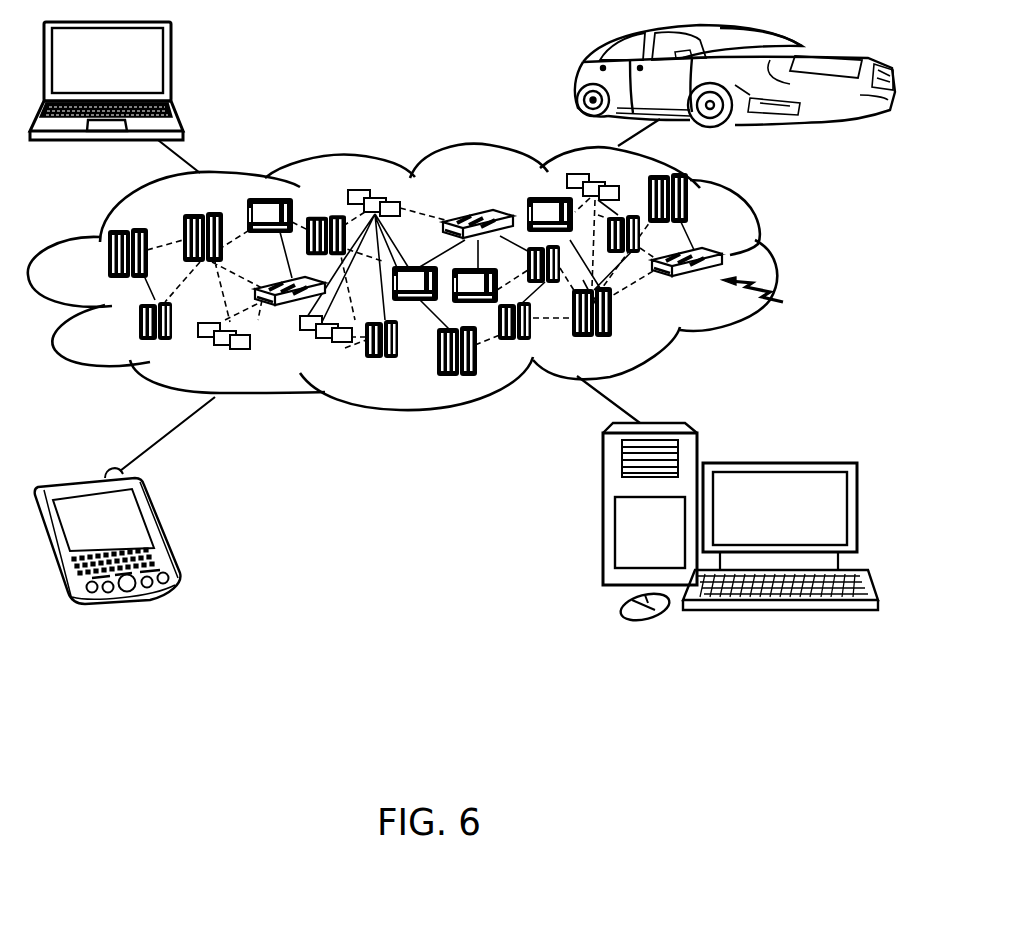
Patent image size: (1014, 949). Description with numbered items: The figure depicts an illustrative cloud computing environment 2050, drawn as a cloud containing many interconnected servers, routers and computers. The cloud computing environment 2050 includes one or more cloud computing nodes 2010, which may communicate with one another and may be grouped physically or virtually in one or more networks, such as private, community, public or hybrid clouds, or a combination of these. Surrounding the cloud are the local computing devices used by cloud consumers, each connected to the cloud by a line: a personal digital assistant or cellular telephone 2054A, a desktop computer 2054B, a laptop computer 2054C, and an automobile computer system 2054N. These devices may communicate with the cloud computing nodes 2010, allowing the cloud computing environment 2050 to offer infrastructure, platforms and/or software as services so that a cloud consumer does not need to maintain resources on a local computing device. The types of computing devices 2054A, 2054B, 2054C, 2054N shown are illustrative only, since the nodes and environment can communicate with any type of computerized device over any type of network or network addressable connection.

The cloud computing environment 2050 is at (778, 260).
The cloud computing nodes 2010 is at (781, 297).
The personal digital assistant (PDA) or cellular telephone 2054A is at (163, 528).
The desktop computer 2054B is at (787, 447).
The laptop computer 2054C is at (172, 67).
The automobile computer system 2054N is at (575, 78).